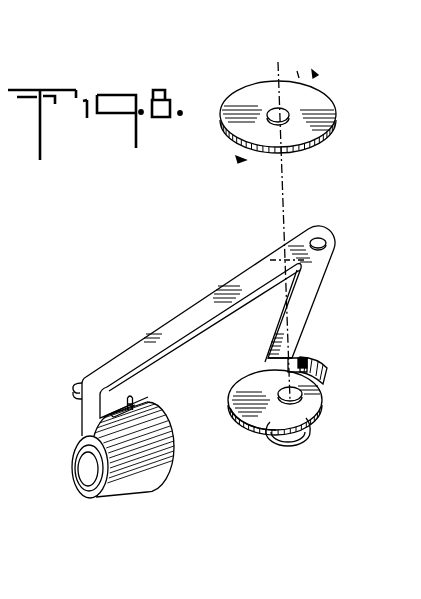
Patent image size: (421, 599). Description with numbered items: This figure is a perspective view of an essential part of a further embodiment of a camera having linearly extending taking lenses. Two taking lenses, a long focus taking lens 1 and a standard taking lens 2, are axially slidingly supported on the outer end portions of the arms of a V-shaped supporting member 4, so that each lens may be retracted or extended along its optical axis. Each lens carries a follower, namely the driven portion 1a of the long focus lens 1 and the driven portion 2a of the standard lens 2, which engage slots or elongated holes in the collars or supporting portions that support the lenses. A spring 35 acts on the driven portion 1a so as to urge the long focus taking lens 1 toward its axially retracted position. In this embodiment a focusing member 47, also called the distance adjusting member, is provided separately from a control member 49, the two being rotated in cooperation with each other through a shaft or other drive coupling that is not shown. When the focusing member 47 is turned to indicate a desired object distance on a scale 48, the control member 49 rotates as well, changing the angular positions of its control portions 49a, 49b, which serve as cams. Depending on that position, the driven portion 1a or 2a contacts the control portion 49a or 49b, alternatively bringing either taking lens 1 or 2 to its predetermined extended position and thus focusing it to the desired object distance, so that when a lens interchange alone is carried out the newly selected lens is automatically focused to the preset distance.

The long focus taking lens 1 is at (93, 478).
The driven portion 1a is at (131, 398).
The standard taking lens 2 is at (290, 447).
The driven portion 2a is at (300, 362).
The V-shaped supporting member 4 is at (176, 320).
The spring 35 is at (104, 402).
The focusing member 47 is at (336, 116).
The scale 48 is at (297, 72).
The control member 49 is at (238, 386).
The control portion 49a is at (249, 425).
The control portion 49b is at (323, 368).